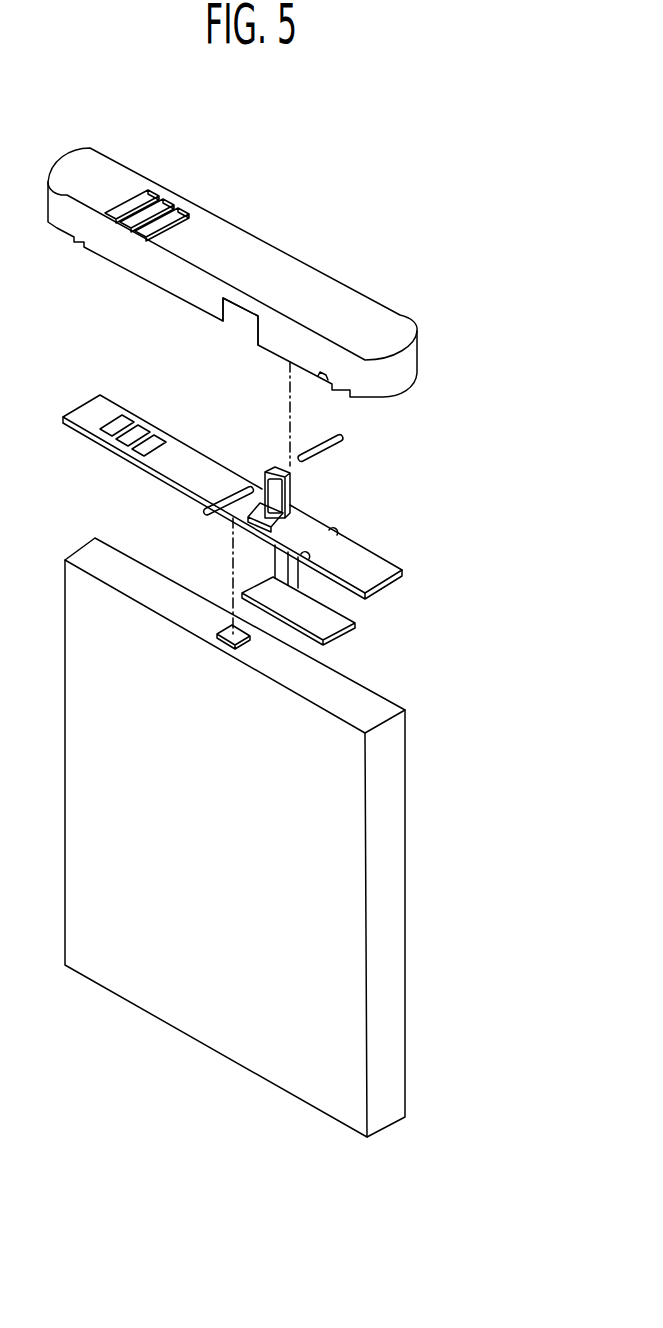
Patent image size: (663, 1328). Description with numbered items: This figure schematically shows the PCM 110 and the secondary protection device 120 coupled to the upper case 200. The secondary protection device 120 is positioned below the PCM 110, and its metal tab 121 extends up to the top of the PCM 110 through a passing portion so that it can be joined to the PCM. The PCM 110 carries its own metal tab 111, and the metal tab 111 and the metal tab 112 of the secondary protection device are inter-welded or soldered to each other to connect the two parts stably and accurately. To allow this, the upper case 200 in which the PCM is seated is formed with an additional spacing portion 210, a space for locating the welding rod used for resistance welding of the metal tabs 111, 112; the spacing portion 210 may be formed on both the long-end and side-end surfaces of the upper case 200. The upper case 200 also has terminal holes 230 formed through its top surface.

The upper case 200 is at (285, 261).
The spacing portion 210 is at (241, 323).
The terminal hole 230 is at (159, 205).
The PCM 110 is at (405, 551).
The metal tab of the PCM 111 is at (275, 487).
The metal tab of the secondary protection device 112 is at (292, 503).
The metal tab 121 is at (292, 478).
The secondary protection device 120 is at (332, 627).